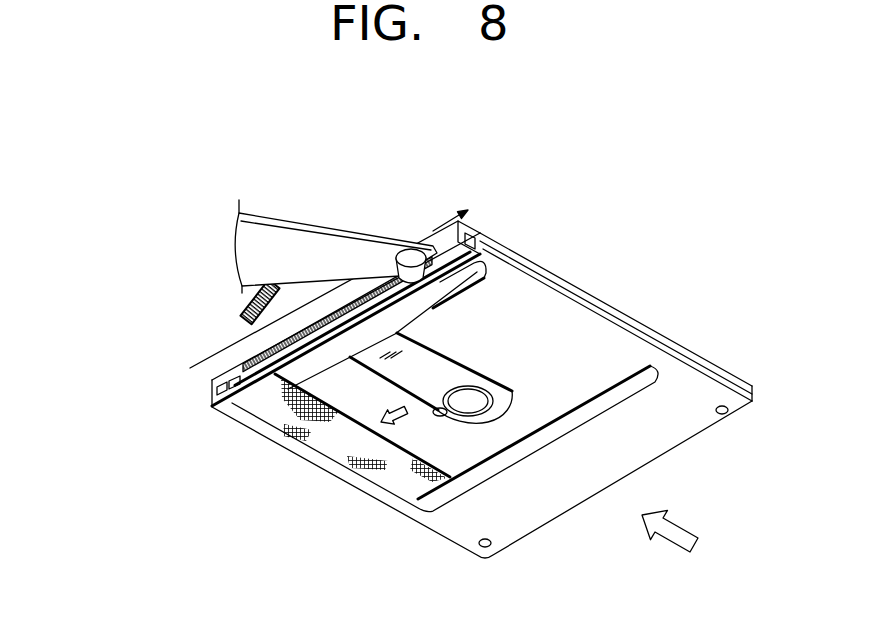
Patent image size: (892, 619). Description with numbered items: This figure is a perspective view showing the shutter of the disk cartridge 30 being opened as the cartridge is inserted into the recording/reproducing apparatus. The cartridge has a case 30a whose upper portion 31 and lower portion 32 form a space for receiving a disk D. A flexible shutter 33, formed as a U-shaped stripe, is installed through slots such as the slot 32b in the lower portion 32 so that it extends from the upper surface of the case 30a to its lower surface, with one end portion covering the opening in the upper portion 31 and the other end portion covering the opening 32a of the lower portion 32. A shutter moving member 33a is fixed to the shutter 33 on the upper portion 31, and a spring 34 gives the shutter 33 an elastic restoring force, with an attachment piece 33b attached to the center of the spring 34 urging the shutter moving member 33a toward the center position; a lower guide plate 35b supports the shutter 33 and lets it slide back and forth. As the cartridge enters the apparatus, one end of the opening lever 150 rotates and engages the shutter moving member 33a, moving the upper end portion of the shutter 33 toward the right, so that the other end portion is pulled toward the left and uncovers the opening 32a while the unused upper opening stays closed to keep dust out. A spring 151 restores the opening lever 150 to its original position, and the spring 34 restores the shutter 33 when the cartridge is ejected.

The disk cartridge 30 is at (445, 348).
The case 30a is at (678, 455).
The upper portion 31 is at (540, 268).
The lower portion 32 is at (597, 313).
The opening 32a is at (440, 414).
The slot 32b is at (230, 408).
The shutter 33 is at (332, 458).
The shutter moving member 33a is at (404, 268).
The attachment piece 33b is at (433, 252).
The spring 34 is at (247, 357).
The lower guide plate 35b is at (610, 393).
The opening lever 150 is at (290, 225).
The spring 151 is at (237, 310).
The disk D is at (427, 365).